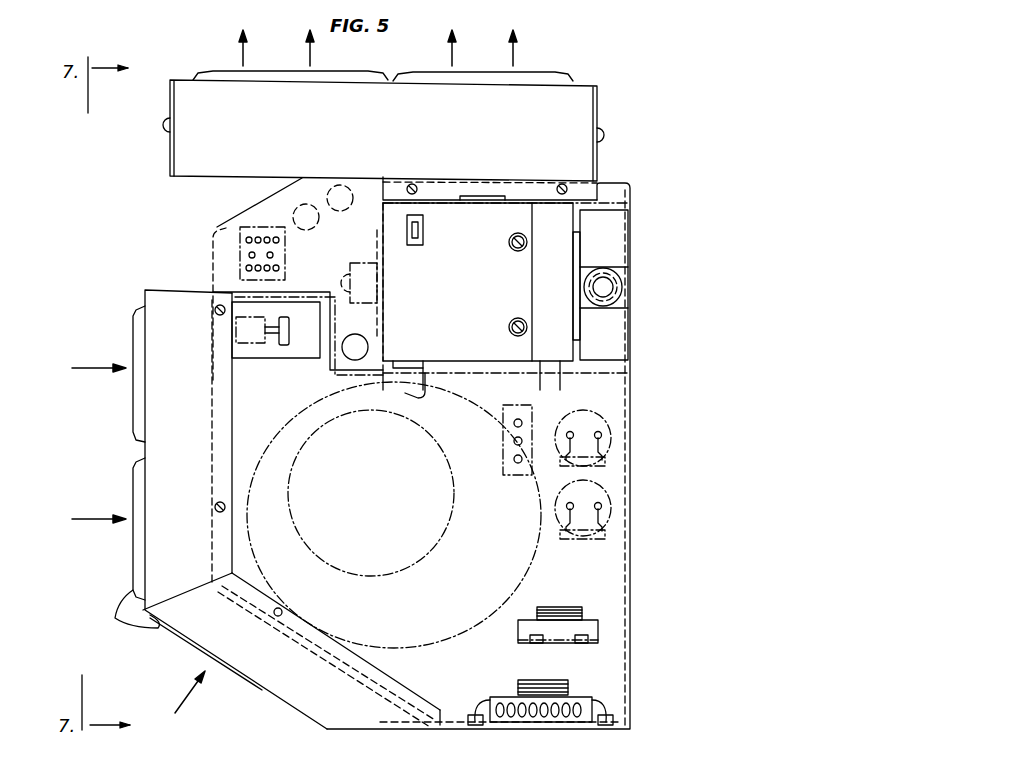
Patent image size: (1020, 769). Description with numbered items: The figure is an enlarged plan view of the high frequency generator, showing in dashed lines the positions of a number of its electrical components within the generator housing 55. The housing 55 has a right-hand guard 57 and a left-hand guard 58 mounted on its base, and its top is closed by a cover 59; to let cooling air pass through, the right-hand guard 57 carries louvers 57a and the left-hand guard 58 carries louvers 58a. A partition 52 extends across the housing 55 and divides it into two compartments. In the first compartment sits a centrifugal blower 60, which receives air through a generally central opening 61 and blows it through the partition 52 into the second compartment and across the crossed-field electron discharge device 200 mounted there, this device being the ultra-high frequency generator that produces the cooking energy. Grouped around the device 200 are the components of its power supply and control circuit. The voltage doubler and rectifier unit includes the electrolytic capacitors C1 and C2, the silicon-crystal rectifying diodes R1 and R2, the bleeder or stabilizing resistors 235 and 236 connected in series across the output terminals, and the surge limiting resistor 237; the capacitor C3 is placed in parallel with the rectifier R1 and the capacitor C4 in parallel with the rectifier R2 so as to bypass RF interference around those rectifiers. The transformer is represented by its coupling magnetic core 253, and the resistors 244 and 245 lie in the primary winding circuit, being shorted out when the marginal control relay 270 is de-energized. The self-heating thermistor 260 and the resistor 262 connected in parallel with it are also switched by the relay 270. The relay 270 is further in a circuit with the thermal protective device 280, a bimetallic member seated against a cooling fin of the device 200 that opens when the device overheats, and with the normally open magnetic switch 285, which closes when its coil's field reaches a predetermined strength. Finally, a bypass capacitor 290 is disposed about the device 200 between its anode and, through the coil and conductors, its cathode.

The left-hand guard 58 is at (195, 142).
The louvers 58a is at (213, 75).
The magnetic switch 285 is at (490, 198).
The generator housing 55 is at (633, 573).
The cover 59 is at (612, 600).
The right-hand guard 57 is at (162, 328).
The louvers 57a is at (133, 407).
The partition 52 is at (240, 290).
The resistor 244 is at (294, 208).
The resistor 245 is at (330, 186).
The marginal control relay 270 is at (240, 230).
The coupling magnetic core 253 is at (290, 358).
The thermistor 260 is at (292, 318).
The crossed-field electron discharge device 200 is at (583, 251).
The thermal protective device 280 is at (424, 220).
The resistor 262 is at (368, 352).
The bypass capacitor 290 is at (410, 376).
The blower 60 is at (535, 560).
The opening 61 is at (440, 533).
The capacitor C1 is at (612, 432).
The bleeder or stabilizing resistor 235 is at (605, 462).
The capacitor C2 is at (608, 495).
The bleeder or stabilizing resistor 236 is at (605, 530).
The capacitor C3 is at (572, 605).
The rectifying diode R1 is at (600, 632).
The capacitor C4 is at (553, 682).
The rectifying diode R2 is at (585, 700).
The surge limiting resistor 237 is at (533, 718).